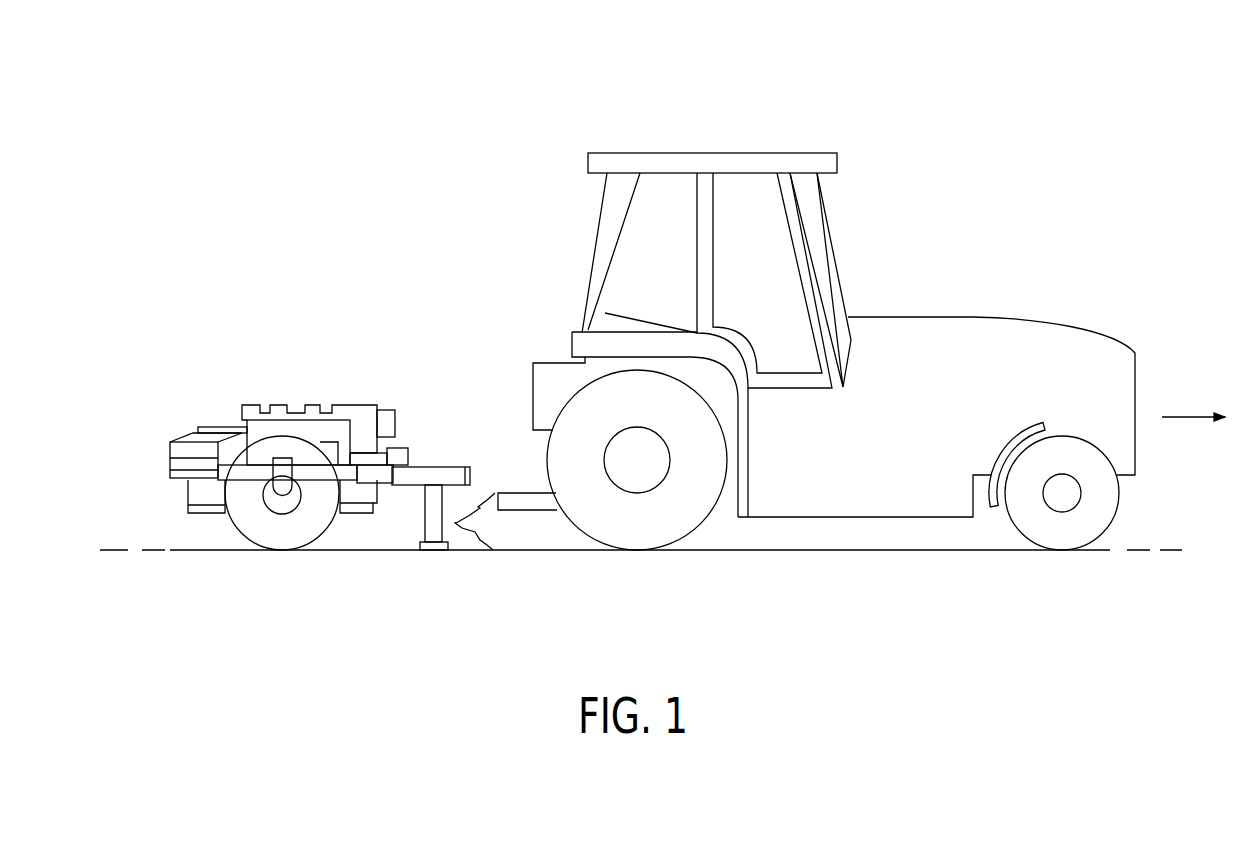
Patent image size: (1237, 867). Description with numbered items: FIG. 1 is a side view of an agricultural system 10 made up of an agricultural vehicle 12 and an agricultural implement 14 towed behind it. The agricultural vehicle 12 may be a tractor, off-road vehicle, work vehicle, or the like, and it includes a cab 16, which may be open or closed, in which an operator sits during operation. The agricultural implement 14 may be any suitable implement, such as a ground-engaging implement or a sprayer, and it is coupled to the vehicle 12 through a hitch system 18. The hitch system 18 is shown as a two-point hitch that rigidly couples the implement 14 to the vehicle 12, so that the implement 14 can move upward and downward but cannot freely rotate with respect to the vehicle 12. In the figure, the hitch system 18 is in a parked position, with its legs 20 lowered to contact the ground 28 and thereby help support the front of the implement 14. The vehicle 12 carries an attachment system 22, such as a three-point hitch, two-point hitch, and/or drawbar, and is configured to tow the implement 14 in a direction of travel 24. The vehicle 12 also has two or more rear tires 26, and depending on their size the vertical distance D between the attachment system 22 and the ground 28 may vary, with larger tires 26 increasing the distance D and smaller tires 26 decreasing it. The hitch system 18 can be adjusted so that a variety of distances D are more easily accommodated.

The agricultural system 10 is at (538, 77).
The agricultural vehicle 12 is at (1002, 287).
The agricultural implement 14 is at (267, 370).
The cab 16 is at (771, 312).
The hitch system 18 is at (430, 465).
The legs 20 is at (423, 512).
The attachment system 22 is at (520, 498).
The direction of travel 24 is at (1187, 417).
The rear tires 26 is at (588, 398).
The ground 28 is at (771, 608).
The vertical distance D is at (453, 523).